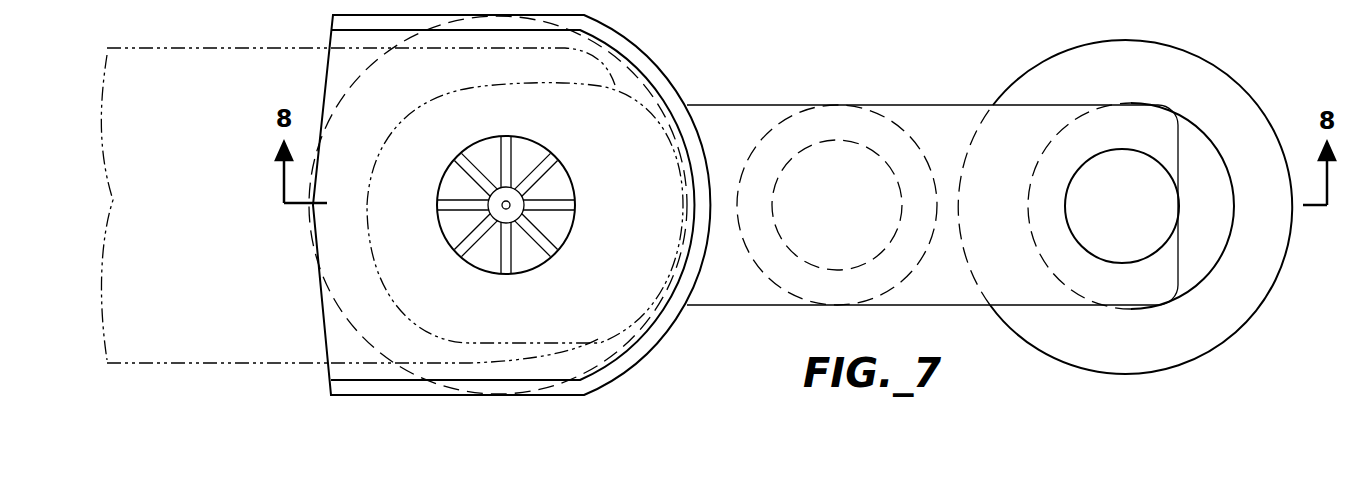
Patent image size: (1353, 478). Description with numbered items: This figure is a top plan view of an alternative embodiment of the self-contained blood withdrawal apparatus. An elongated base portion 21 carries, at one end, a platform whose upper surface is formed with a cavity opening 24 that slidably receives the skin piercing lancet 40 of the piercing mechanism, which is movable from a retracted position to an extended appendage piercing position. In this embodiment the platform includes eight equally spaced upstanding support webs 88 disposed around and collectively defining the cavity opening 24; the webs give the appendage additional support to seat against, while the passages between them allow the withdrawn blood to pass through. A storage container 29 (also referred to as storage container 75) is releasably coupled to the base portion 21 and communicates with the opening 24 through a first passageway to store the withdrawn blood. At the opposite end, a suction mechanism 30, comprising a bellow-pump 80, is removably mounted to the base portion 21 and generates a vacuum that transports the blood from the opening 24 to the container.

The base portion 21 is at (913, 105).
The cavity opening 24 is at (577, 167).
The storage container 29 is at (861, 188).
The suction mechanism 30 is at (1130, 195).
The lancet 40 is at (502, 208).
The storage container 75 is at (910, 270).
The bellow-pump 80 is at (1243, 330).
The upstanding support webs 88 is at (498, 156).